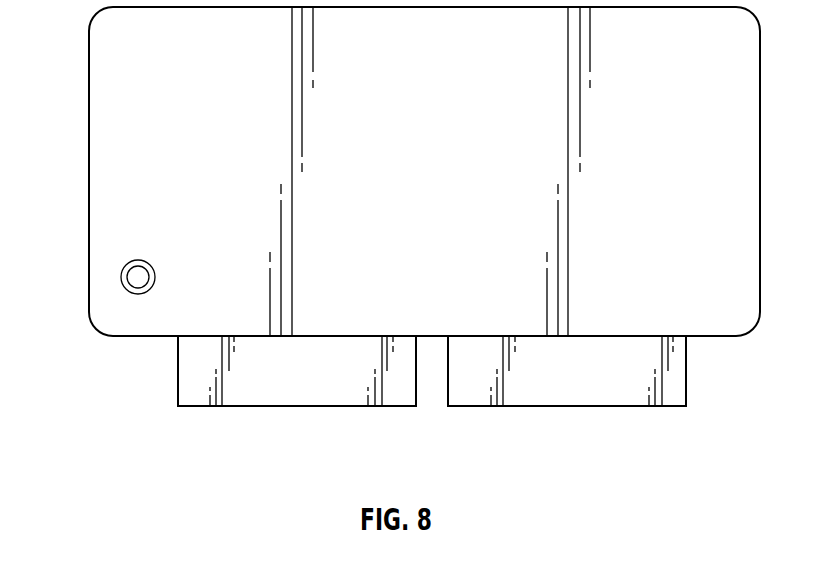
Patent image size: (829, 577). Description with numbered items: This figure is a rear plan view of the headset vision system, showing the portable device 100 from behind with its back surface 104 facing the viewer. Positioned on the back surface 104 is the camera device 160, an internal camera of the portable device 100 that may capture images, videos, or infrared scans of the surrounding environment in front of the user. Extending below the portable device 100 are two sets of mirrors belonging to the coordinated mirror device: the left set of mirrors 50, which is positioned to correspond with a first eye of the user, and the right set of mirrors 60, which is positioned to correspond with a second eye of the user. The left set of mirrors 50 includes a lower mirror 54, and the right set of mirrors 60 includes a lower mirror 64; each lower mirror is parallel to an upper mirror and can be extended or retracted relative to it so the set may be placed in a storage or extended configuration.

The portable device 100 is at (383, 242).
The back surface 104 is at (107, 52).
The camera device 160 is at (103, 274).
The right set of mirrors 60 is at (297, 407).
The lower mirror 64 is at (258, 390).
The left set of mirrors 50 is at (567, 407).
The lower mirror 54 is at (590, 395).